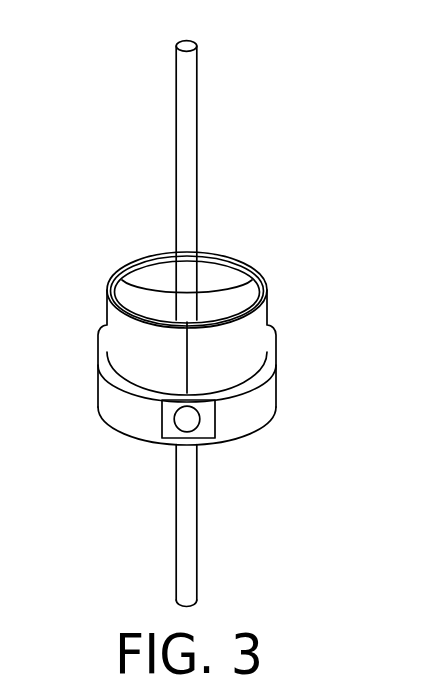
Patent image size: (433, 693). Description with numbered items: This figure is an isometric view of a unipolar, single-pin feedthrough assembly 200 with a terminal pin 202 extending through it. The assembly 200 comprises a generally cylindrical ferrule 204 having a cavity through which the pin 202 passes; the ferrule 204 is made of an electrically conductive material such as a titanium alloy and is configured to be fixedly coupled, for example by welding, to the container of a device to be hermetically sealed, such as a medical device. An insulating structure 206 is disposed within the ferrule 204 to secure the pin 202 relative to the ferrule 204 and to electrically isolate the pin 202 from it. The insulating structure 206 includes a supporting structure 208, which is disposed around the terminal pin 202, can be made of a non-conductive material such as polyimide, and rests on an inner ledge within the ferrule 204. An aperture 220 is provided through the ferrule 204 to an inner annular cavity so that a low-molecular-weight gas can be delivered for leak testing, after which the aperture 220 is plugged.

The feedthrough assembly 200 is at (270, 252).
The terminal pin 202 is at (195, 113).
The ferrule 204 is at (247, 345).
The insulating structure 206 is at (150, 297).
The supporting structure 208 is at (208, 297).
The aperture 220 is at (190, 420).